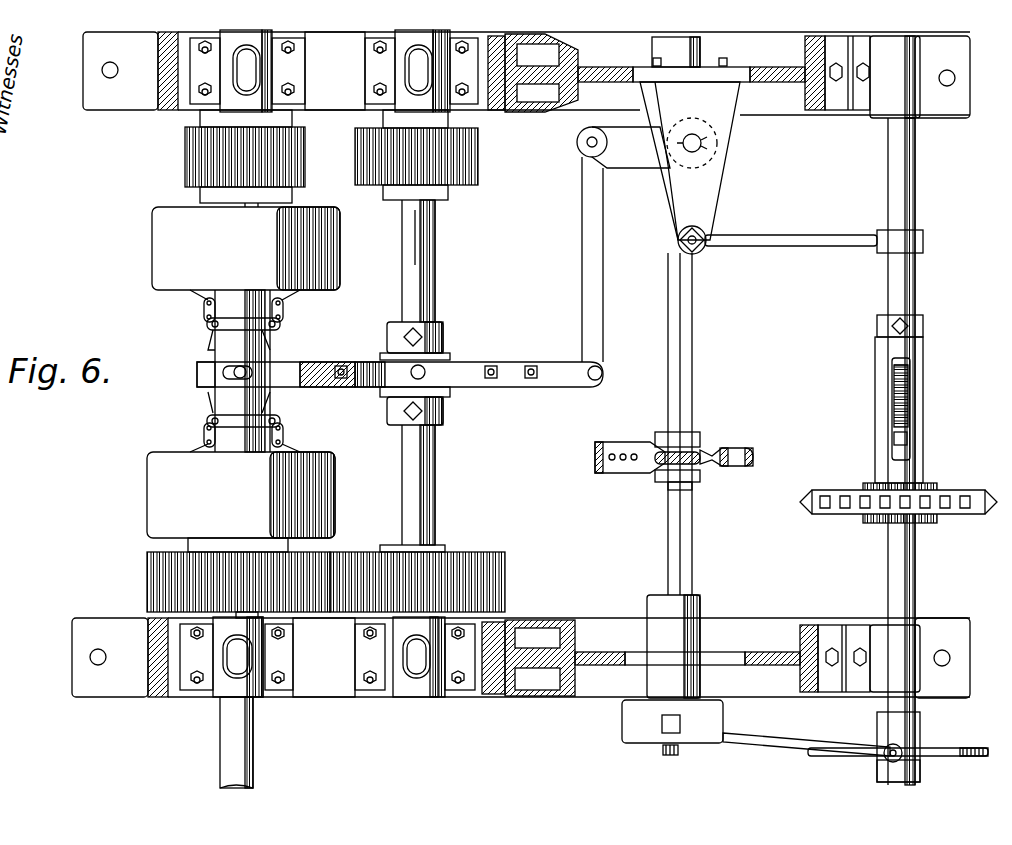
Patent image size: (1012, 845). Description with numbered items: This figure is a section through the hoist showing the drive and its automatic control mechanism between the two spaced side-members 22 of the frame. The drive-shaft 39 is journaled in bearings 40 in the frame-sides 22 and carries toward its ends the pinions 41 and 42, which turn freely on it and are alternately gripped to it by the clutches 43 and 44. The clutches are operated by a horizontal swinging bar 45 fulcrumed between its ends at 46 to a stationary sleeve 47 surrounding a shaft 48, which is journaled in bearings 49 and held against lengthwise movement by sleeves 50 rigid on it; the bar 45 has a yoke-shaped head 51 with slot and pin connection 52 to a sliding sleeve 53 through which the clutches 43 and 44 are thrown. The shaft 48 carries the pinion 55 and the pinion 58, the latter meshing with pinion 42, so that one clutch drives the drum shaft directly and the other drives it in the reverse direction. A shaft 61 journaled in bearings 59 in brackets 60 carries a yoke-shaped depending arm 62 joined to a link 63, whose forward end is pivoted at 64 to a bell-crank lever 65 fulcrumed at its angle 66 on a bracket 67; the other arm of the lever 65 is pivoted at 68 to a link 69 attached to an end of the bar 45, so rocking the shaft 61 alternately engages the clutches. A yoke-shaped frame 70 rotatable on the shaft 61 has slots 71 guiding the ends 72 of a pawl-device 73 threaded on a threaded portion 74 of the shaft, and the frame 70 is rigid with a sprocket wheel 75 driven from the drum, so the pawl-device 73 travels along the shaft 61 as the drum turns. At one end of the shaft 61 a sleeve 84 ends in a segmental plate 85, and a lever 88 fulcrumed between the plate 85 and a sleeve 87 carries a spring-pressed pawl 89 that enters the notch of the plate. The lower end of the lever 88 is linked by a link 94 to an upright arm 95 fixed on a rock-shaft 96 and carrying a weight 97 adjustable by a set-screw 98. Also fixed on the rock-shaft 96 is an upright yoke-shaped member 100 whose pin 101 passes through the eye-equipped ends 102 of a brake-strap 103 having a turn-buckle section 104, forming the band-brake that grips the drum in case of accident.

The side-members 22 is at (329, 364).
The drive-shaft 39 is at (204, 742).
The bearings 40 is at (262, 60).
The pinion 41 is at (185, 150).
The pinion 42 is at (147, 580).
The clutch 43 is at (246, 248).
The clutch 44 is at (241, 495).
The horizontal swinging bar 45 is at (455, 362).
The fulcrum 46 is at (425, 367).
The stationary sleeve 47 is at (385, 356).
The shaft 48 is at (425, 272).
The bearings 49 is at (400, 716).
The sleeves 50 is at (430, 325).
The yoke-shaped head 51 is at (300, 365).
The slot and pin connection 52 is at (210, 385).
The sliding sleeve 53 is at (212, 348).
The pinion 55 is at (478, 158).
The pinion 58 is at (470, 552).
The bearings 59 is at (905, 92).
The brackets 60 is at (836, 104).
The shaft 61 is at (915, 290).
The yoke-shaped depending arm 62 is at (923, 241).
The link 63 is at (820, 246).
The pivotal connection 64 is at (700, 248).
The bell-crank lever 65 is at (700, 212).
The fulcrum 66 is at (702, 148).
The bracket 67 is at (691, 74).
The pivotal connection 68 is at (582, 150).
The link 69 is at (603, 305).
The yoke-shaped frame 70 is at (875, 385).
The slots 71 is at (910, 370).
The ends 72 is at (908, 405).
The pawl-device 73 is at (907, 438).
The threaded portion 74 is at (908, 380).
The sprocket wheel 75 is at (960, 490).
The sleeve 84 is at (920, 722).
The segmental plate 85 is at (850, 756).
The sleeve 87 is at (877, 772).
The lever 88 is at (905, 760).
The spring-pressed pawl 89 is at (888, 744).
The link 94 is at (760, 740).
The upright arm 95 is at (662, 724).
The rock-shaft 96 is at (692, 405).
The weight 97 is at (723, 718).
The set-screw 98 is at (668, 755).
The yoke-shaped member 100 is at (655, 438).
The pin 101 is at (692, 486).
The eye-equipped ends 102 is at (665, 464).
The brake-strap 103 is at (612, 473).
The turn-buckle section 104 is at (740, 448).